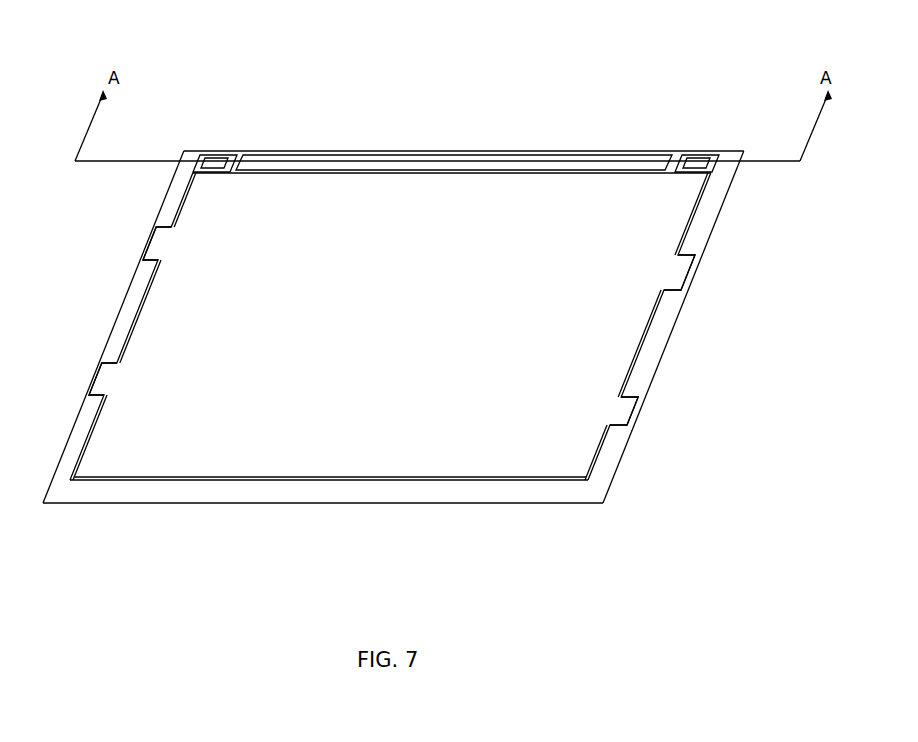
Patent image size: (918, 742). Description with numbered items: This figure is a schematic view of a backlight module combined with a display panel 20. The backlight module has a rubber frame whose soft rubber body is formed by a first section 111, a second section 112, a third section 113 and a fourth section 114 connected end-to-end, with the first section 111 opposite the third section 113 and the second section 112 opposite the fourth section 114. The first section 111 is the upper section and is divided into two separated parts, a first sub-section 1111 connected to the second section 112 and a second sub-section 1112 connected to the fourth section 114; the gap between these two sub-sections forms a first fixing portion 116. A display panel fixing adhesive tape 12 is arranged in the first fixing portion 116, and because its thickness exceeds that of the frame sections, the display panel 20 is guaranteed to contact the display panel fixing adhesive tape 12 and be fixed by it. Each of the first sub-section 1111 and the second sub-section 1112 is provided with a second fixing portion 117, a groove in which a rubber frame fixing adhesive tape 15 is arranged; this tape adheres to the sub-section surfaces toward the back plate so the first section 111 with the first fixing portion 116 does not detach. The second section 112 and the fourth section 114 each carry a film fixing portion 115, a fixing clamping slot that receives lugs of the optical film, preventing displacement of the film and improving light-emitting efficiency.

The first section 111 is at (636, 75).
The first sub-section 1111 is at (702, 162).
The second sub-section 1112 is at (218, 157).
The second section 112 is at (653, 342).
The third section 113 is at (333, 487).
The fourth section 114 is at (134, 313).
The film fixing portion 115 is at (115, 383).
The first fixing portion 116 is at (243, 158).
The second fixing portion 117 is at (210, 153).
The rubber frame fixing adhesive tape 15 is at (212, 157).
The display panel fixing adhesive tape 12 is at (395, 163).
The display panel 20 is at (270, 440).